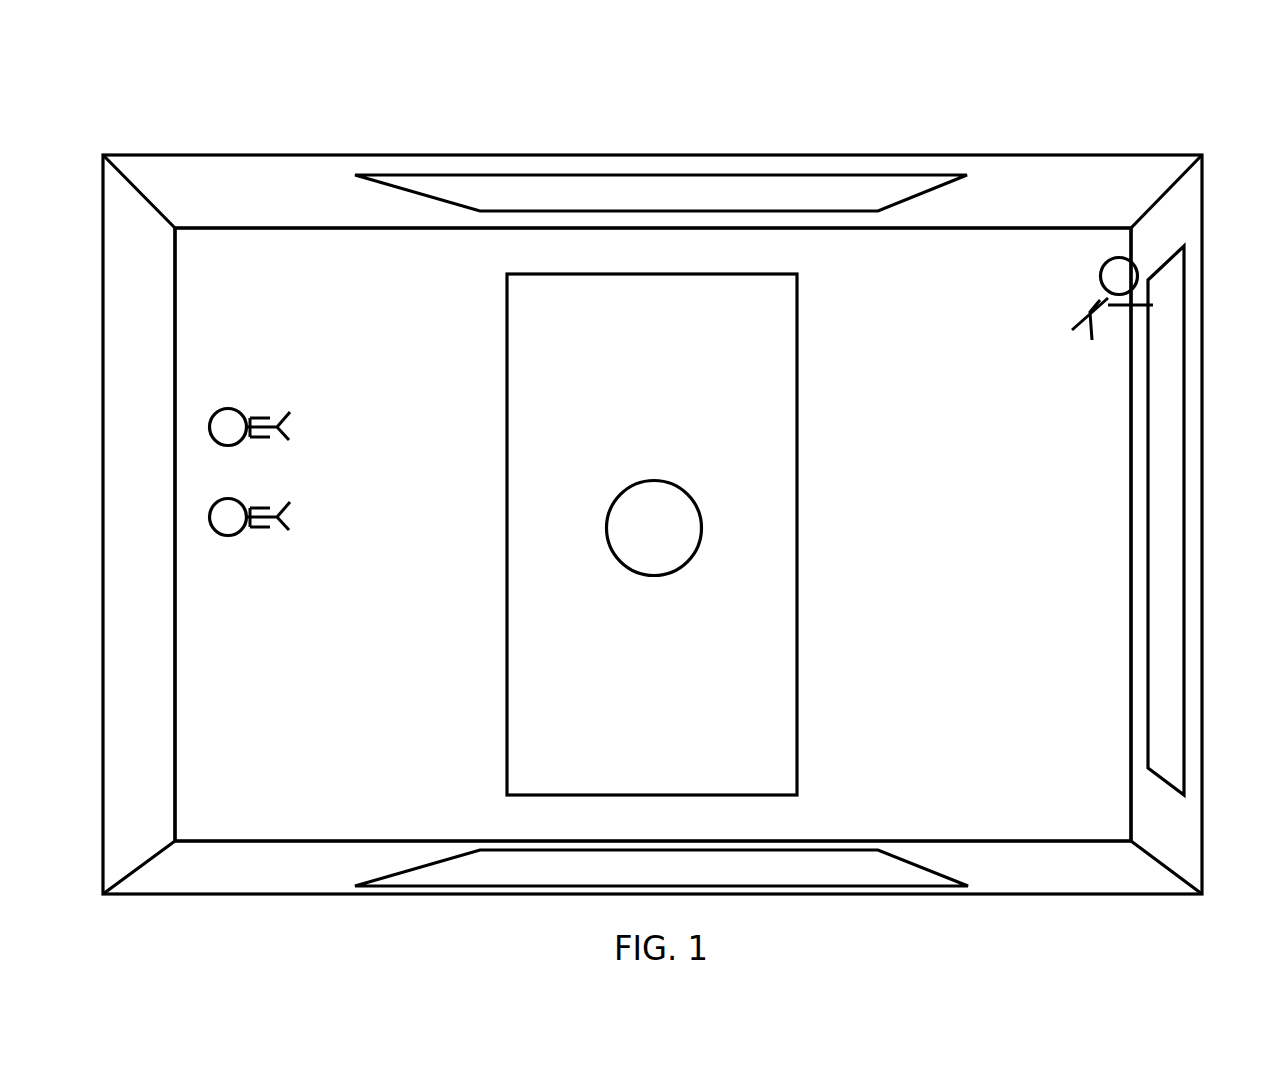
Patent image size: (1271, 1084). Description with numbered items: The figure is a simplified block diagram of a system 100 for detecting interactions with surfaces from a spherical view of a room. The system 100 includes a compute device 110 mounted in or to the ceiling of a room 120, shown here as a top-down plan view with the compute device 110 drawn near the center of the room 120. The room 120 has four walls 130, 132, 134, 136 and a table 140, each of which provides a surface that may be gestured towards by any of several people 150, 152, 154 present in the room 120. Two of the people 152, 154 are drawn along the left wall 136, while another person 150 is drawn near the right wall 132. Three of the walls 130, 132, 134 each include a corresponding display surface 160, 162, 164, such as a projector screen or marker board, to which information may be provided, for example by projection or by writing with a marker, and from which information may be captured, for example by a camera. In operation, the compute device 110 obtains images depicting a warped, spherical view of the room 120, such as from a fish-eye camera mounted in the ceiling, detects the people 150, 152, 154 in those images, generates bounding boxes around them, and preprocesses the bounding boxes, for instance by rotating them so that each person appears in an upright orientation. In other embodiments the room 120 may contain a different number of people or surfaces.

The system 100 is at (998, 95).
The compute device 110 is at (653, 480).
The room 120 is at (211, 147).
The wall 130 is at (332, 229).
The wall 132 is at (1138, 760).
The wall 134 is at (400, 841).
The wall 136 is at (163, 328).
The table 140 is at (797, 383).
The person 150 is at (1071, 316).
The person 152 is at (289, 409).
The person 154 is at (283, 501).
The display surface 160 is at (922, 193).
The display surface 162 is at (1145, 705).
The display surface 164 is at (550, 850).